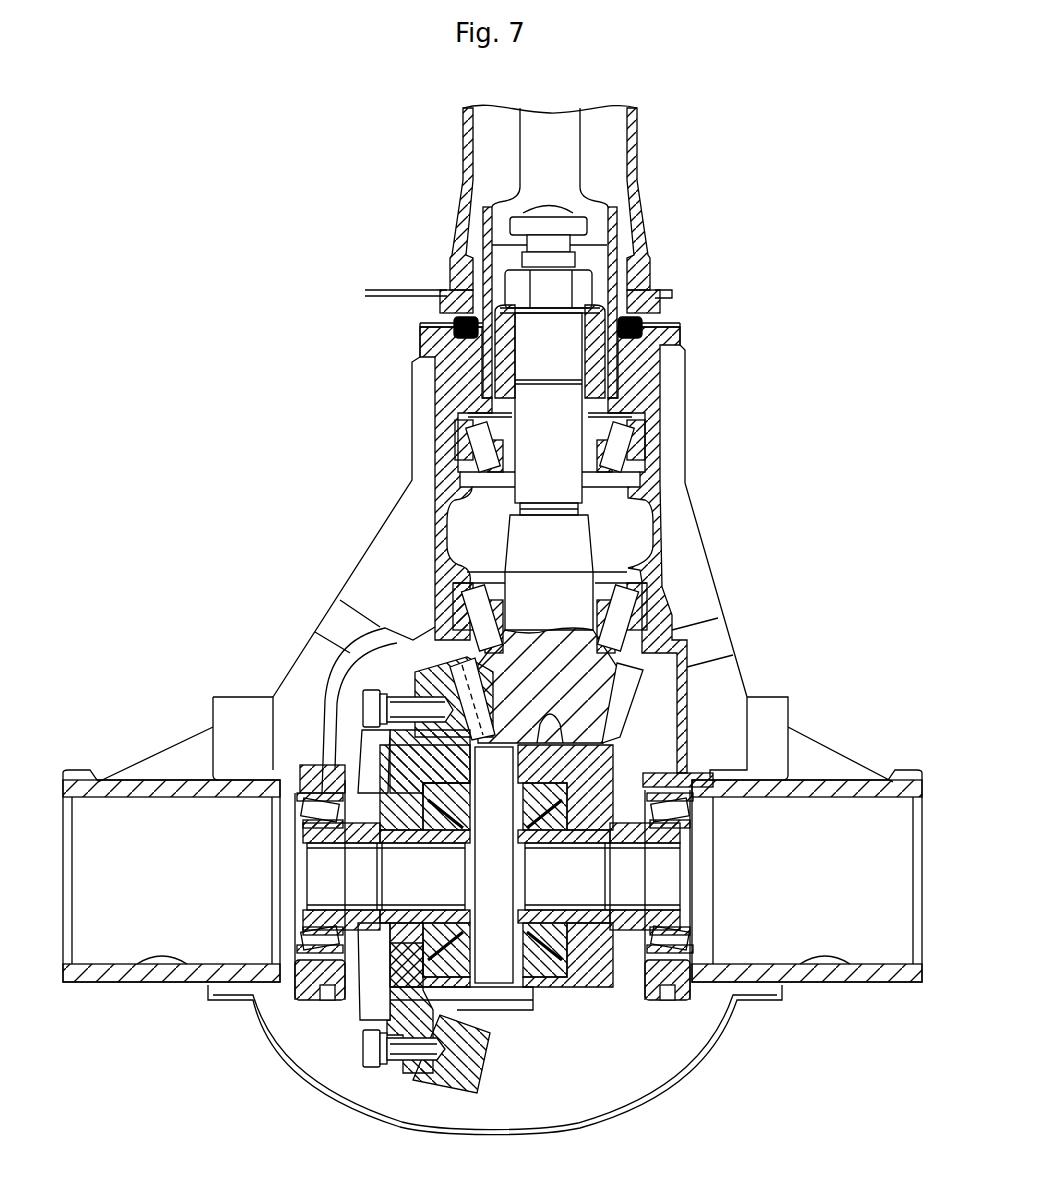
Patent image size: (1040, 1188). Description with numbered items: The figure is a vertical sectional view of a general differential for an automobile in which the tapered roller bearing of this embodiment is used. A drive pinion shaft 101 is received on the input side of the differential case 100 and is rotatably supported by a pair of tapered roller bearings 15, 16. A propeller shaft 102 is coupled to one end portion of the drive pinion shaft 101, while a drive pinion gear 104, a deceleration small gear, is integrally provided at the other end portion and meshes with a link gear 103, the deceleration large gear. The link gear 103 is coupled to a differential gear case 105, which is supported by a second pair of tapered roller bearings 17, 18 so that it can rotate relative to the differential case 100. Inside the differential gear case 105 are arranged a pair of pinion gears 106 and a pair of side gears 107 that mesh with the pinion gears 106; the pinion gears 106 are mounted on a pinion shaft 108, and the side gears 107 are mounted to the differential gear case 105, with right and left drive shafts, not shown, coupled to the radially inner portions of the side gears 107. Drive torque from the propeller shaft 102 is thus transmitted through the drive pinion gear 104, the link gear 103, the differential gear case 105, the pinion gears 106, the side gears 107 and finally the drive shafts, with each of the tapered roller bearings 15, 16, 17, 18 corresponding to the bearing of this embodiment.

The differential case 100 is at (433, 498).
The drive pinion shaft 101 is at (592, 535).
The propeller shaft 102 is at (620, 216).
The link gear 103 is at (427, 663).
The drive pinion gear 104 is at (625, 687).
The differential gear case 105 is at (398, 773).
The pinion gears 106 is at (528, 783).
The side gears 107 is at (423, 935).
The pinion shaft 108 is at (503, 975).
The tapered roller bearing 15 is at (622, 612).
The tapered roller bearing 16 is at (615, 446).
The tapered roller bearing 17 is at (318, 806).
The tapered roller bearing 18 is at (670, 800).